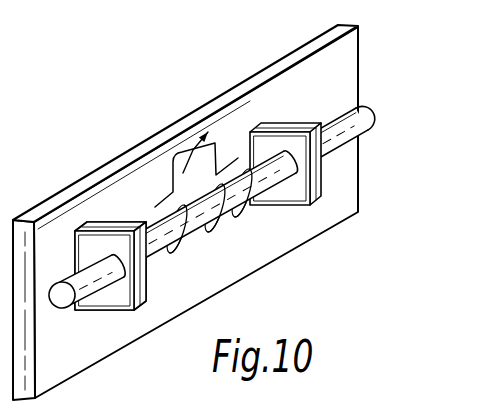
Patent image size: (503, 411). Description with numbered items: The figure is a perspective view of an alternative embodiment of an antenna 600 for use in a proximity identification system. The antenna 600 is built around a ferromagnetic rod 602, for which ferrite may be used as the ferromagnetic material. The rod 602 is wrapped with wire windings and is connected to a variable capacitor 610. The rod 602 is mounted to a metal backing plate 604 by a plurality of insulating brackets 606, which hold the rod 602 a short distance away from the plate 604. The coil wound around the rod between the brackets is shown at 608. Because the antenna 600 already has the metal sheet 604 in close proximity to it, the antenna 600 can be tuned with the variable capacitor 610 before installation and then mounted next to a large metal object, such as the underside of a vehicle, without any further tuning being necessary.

The antenna 600 is at (208, 303).
The ferromagnetic rod 602 is at (349, 141).
The metal backing plate 604 is at (153, 138).
The insulating brackets 606 is at (290, 122).
The coil spring 608 is at (204, 228).
The variable capacitor 610 is at (175, 158).